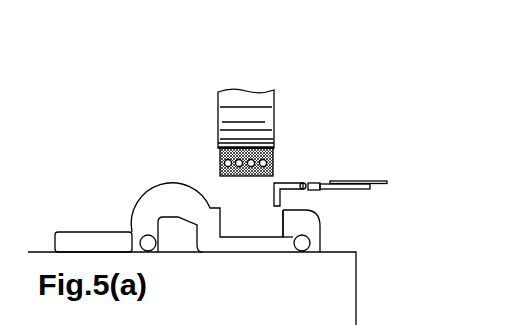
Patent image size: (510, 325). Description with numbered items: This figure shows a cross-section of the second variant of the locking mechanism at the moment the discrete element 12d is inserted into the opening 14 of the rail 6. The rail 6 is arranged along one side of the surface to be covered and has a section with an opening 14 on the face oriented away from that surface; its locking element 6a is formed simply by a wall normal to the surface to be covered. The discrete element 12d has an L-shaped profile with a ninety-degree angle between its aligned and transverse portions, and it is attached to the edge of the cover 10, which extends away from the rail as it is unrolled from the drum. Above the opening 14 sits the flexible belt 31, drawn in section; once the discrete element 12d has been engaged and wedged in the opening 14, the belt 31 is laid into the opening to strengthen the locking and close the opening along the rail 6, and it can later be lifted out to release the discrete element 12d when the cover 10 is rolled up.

The flexible belt 31 is at (255, 107).
The discrete element 12d is at (282, 182).
The cover 10 is at (345, 180).
The opening 14 is at (246, 222).
The locking element 6a is at (280, 223).
The rail 6 is at (257, 243).